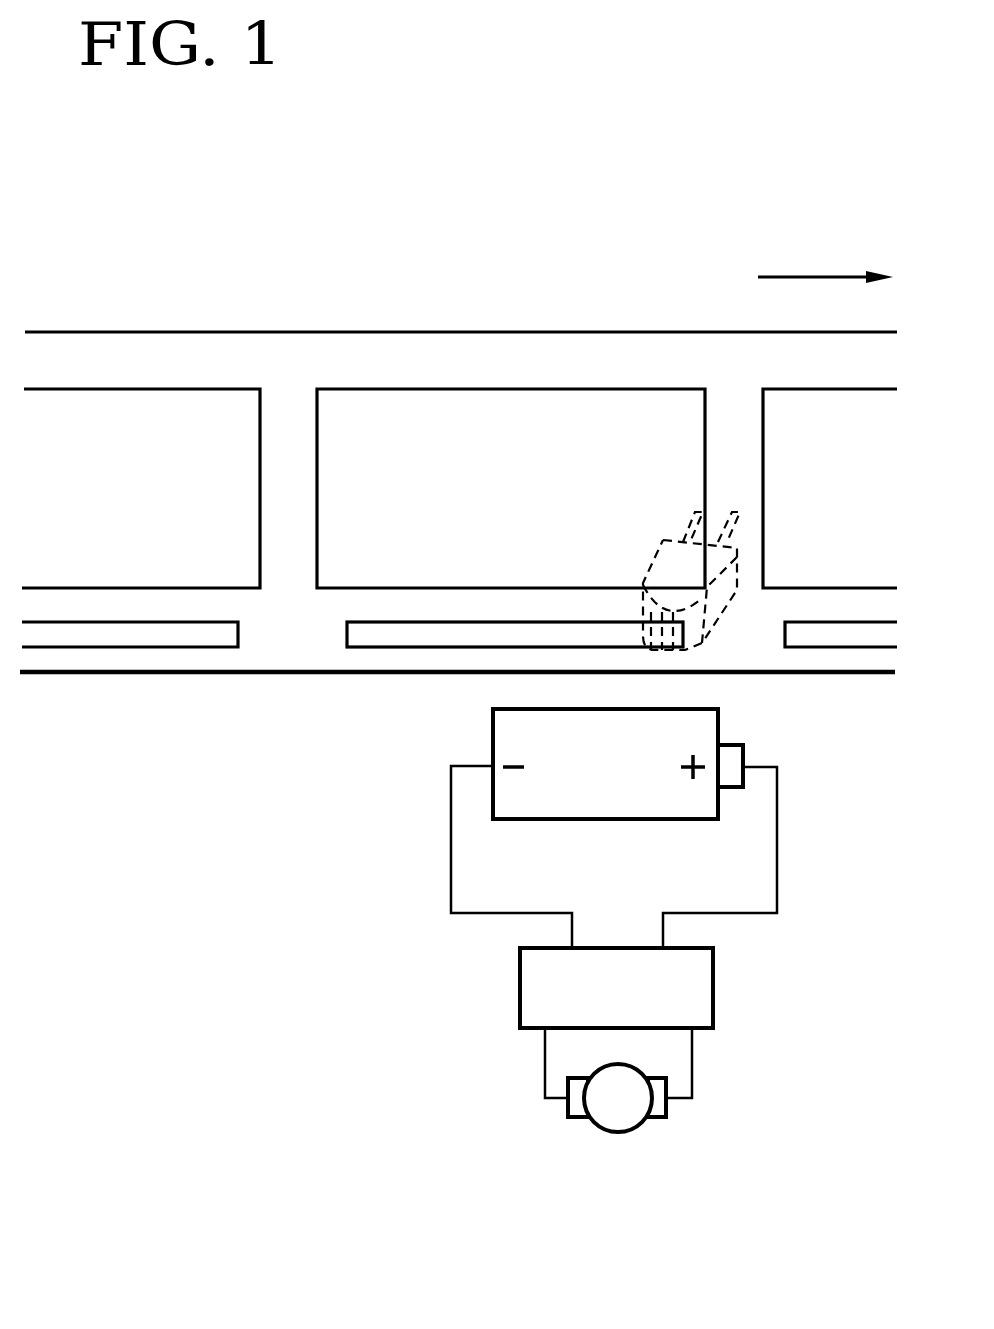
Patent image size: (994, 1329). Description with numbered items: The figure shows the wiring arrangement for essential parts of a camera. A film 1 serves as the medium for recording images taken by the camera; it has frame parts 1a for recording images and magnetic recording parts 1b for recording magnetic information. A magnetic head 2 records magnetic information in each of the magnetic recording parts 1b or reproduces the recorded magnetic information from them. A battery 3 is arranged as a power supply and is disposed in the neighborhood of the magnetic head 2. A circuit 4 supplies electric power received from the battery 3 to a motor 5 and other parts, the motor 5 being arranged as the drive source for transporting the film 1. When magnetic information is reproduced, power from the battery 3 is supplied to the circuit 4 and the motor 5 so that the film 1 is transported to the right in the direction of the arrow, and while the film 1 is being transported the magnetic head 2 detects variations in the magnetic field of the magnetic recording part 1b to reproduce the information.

The film 1 is at (393, 332).
The frame parts 1a is at (568, 389).
The magnetic recording parts 1b is at (164, 647).
The magnetic head 2 is at (713, 627).
The battery 3 is at (493, 733).
The circuit 4 is at (713, 985).
The motor 5 is at (617, 1133).